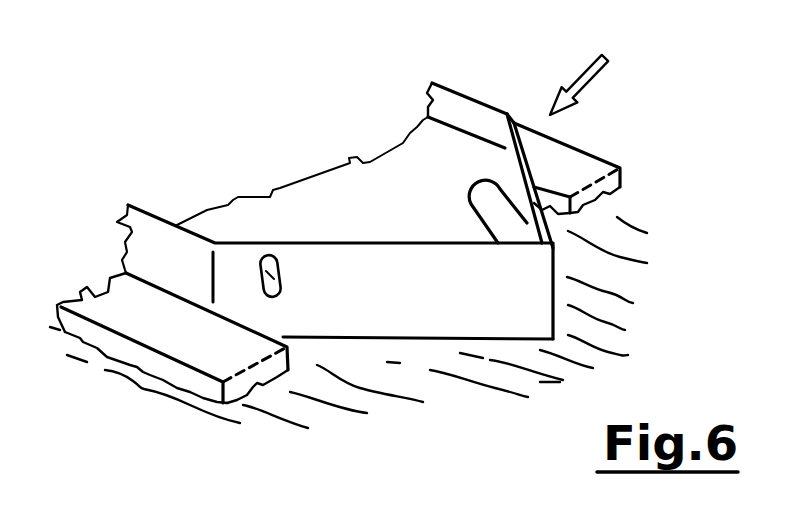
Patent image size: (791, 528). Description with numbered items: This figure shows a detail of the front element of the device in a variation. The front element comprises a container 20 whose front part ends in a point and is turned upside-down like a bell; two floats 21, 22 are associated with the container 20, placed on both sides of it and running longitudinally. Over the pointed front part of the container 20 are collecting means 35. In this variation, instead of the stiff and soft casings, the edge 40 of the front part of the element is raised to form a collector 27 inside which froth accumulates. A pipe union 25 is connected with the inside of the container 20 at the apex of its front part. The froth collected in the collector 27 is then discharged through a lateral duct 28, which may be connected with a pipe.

The container 20 is at (472, 308).
The float 21 is at (170, 338).
The float 22 is at (590, 163).
The pipe union 25 is at (497, 218).
The collector 27 is at (356, 203).
The lateral duct 28 is at (253, 277).
The collecting means 35 is at (598, 73).
The edge 40 is at (470, 113).